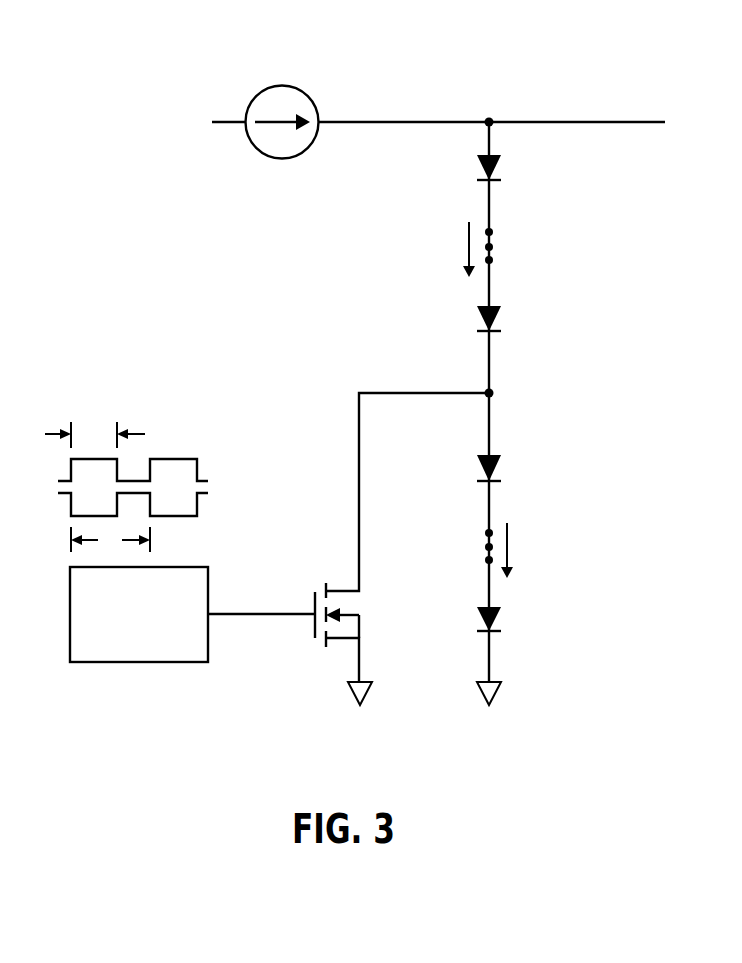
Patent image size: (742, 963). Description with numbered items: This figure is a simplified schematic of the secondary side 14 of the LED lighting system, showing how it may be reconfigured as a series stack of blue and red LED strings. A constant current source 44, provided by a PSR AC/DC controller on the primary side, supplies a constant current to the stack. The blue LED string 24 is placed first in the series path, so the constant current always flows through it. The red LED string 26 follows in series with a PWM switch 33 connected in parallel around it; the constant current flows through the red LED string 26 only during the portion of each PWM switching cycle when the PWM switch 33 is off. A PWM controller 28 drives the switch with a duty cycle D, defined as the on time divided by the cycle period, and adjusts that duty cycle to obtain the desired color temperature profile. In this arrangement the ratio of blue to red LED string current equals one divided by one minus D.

The secondary side 14 is at (629, 99).
The blue LED string 24 is at (506, 213).
The red LED string 26 is at (506, 510).
The PWM controller 28 is at (118, 663).
The PWM switch 33 is at (314, 601).
The constant current source 44 is at (193, 93).